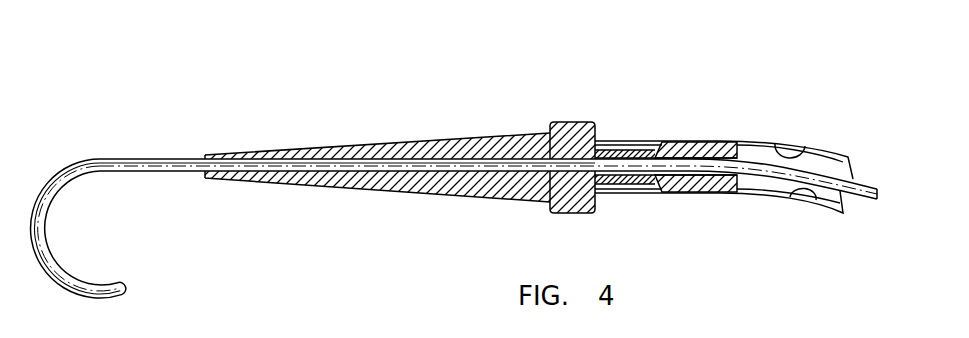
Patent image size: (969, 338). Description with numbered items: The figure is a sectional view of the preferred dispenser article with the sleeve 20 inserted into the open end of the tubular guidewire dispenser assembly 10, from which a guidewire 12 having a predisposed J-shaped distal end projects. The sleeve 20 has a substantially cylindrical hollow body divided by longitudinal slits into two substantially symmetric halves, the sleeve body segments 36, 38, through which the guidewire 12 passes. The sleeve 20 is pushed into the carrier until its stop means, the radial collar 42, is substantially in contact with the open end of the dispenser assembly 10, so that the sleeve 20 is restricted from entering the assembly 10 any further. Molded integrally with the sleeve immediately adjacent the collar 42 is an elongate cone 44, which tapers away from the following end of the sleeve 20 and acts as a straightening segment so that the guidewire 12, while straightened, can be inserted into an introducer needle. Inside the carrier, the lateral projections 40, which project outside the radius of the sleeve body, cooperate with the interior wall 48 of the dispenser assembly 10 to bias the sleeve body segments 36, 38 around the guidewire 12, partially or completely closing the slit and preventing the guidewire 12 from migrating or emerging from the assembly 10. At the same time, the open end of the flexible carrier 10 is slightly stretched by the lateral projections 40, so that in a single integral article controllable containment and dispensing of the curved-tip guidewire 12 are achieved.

The guidewire dispenser assembly 10 is at (842, 130).
The guidewire 12 is at (152, 162).
The sleeve 20 is at (398, 88).
The sleeve body segment 36 is at (723, 193).
The sleeve body segment 38 is at (725, 148).
The lateral projections 40 is at (675, 142).
The radial collar 42 is at (572, 122).
The elongate cone 44 is at (205, 178).
The interior wall 48 is at (775, 145).